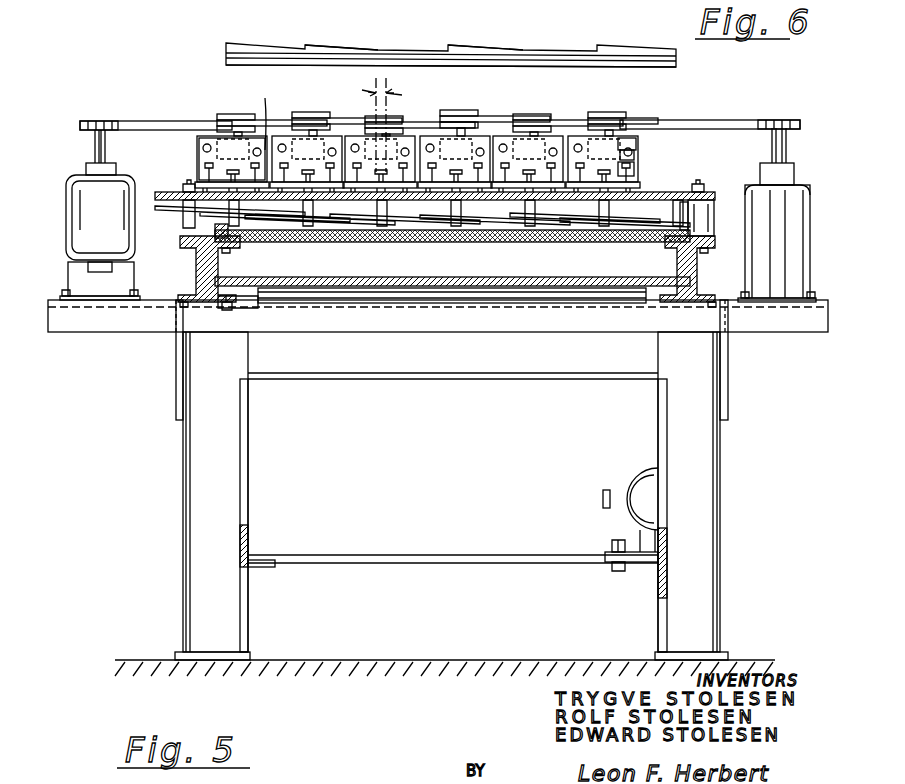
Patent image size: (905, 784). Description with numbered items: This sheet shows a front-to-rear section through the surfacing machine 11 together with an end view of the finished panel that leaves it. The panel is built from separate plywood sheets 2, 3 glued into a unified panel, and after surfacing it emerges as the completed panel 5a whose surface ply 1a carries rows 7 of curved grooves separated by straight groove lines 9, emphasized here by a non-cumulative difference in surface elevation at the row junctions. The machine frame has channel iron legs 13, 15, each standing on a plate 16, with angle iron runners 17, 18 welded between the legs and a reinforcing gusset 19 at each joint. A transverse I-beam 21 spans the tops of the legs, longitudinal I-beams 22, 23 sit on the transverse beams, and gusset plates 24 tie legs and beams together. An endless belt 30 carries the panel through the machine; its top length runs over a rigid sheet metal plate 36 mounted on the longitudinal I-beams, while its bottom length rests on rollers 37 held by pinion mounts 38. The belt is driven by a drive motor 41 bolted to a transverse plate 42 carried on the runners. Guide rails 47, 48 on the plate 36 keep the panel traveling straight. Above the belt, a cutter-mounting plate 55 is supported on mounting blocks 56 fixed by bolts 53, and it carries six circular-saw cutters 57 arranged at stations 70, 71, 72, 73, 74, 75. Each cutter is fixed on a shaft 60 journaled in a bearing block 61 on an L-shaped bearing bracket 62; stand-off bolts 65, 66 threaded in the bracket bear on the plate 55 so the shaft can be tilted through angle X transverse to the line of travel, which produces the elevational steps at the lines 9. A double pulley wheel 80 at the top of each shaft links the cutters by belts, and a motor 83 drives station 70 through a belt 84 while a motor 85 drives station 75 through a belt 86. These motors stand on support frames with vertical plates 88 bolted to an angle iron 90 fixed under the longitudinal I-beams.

In FIG. 6, the surface ply 1a is at (226, 50).
In FIG. 6, the plywood sheet 2 is at (226, 56).
In FIG. 6, the plywood sheet 3 is at (226, 62).
In FIG. 6, the completed panel 5a is at (610, 42).
In FIG. 6, the rows 7 is at (332, 44).
In FIG. 6, the straight groove lines 9 is at (450, 44).
In FIG. 5, the surfacing machine 11 is at (144, 503).
In FIG. 5, the channel iron leg 13 is at (183, 578).
In FIG. 5, the channel iron leg 15 is at (720, 568).
In FIG. 5, the plate 16 is at (176, 654).
In FIG. 5, the angle iron runner 17 is at (268, 568).
In FIG. 5, the angle iron runner 18 is at (658, 594).
In FIG. 5, the reinforcing gusset 19 is at (250, 505).
In FIG. 5, the transverse I-beam 21 is at (578, 381).
In FIG. 5, the longitudinal I-beam 22 is at (205, 270).
In FIG. 5, the longitudinal I-beam 23 is at (698, 262).
In FIG. 5, the gusset plate 24 is at (176, 350).
In FIG. 5, the endless belt 30 is at (302, 242).
In FIG. 5, the sheet metal plate 36 is at (395, 243).
In FIG. 5, the roller 37 is at (374, 306).
In FIG. 5, the pinion mount 38 is at (236, 306).
In FIG. 5, the drive motor 41 is at (606, 510).
In FIG. 5, the transverse plate 42 is at (520, 564).
In FIG. 5, the guide rail 47 is at (232, 232).
In FIG. 5, the guide rail 48 is at (675, 198).
In FIG. 5, the bolt 53 is at (714, 195).
In FIG. 5, the cutter-mounting plate 55 is at (172, 192).
In FIG. 5, the mounting block 56 is at (196, 236).
In FIG. 5, the cutter 57 is at (176, 213).
In FIG. 5, the shaft 60 is at (636, 170).
In FIG. 5, the bearing block 61 is at (636, 154).
In FIG. 5, the L-shaped bearing bracket 62 is at (638, 142).
In FIG. 5, the stand-off bolt 65 is at (205, 164).
In FIG. 5, the stand-off bolt 66 is at (260, 113).
In FIG. 5, the station 70 is at (242, 121).
In FIG. 5, the station 71 is at (316, 119).
In FIG. 5, the station 72 is at (376, 116).
In FIG. 5, the station 73 is at (470, 108).
In FIG. 5, the station 74 is at (536, 112).
In FIG. 5, the station 75 is at (616, 112).
In FIG. 5, the double pulley wheel 80 is at (630, 122).
In FIG. 5, the motor 83 is at (78, 228).
In FIG. 5, the belt 84 is at (149, 121).
In FIG. 5, the motor 85 is at (790, 182).
In FIG. 5, the belt 86 is at (705, 122).
In FIG. 5, the vertical plate 88 is at (78, 282).
In FIG. 5, the angle iron 90 is at (75, 333).